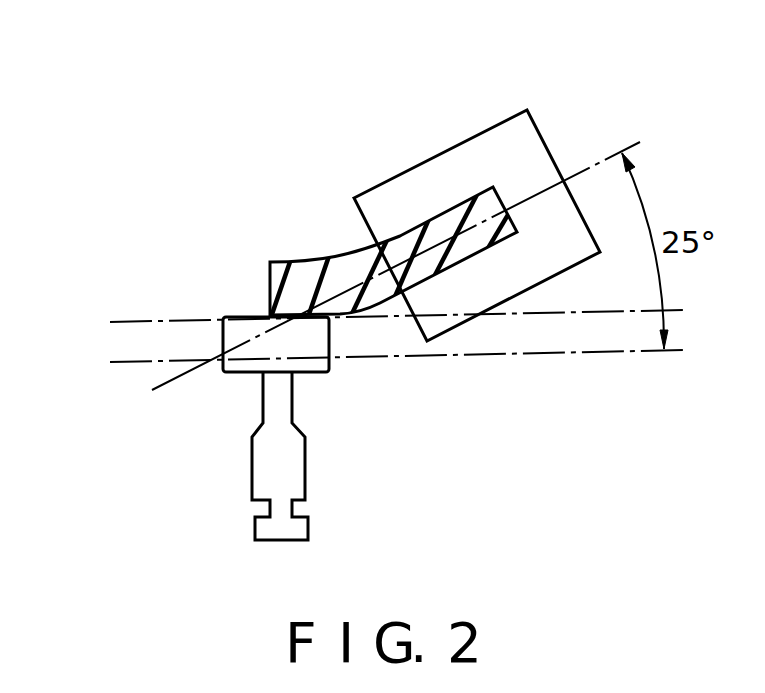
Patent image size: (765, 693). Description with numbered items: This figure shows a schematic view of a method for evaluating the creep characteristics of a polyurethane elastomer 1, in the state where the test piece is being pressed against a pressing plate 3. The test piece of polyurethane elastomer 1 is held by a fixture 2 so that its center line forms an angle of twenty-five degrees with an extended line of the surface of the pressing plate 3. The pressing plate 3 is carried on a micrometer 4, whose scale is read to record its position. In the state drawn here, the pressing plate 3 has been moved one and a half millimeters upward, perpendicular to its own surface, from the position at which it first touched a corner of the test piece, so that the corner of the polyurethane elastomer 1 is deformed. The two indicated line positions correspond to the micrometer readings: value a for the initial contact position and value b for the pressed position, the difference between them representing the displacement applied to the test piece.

The polyurethane elastomer 1 is at (303, 277).
The fixture 2 is at (410, 185).
The pressing plate 3 is at (320, 366).
The micrometer 4 is at (298, 470).
The value a is at (384, 361).
The value b is at (381, 322).